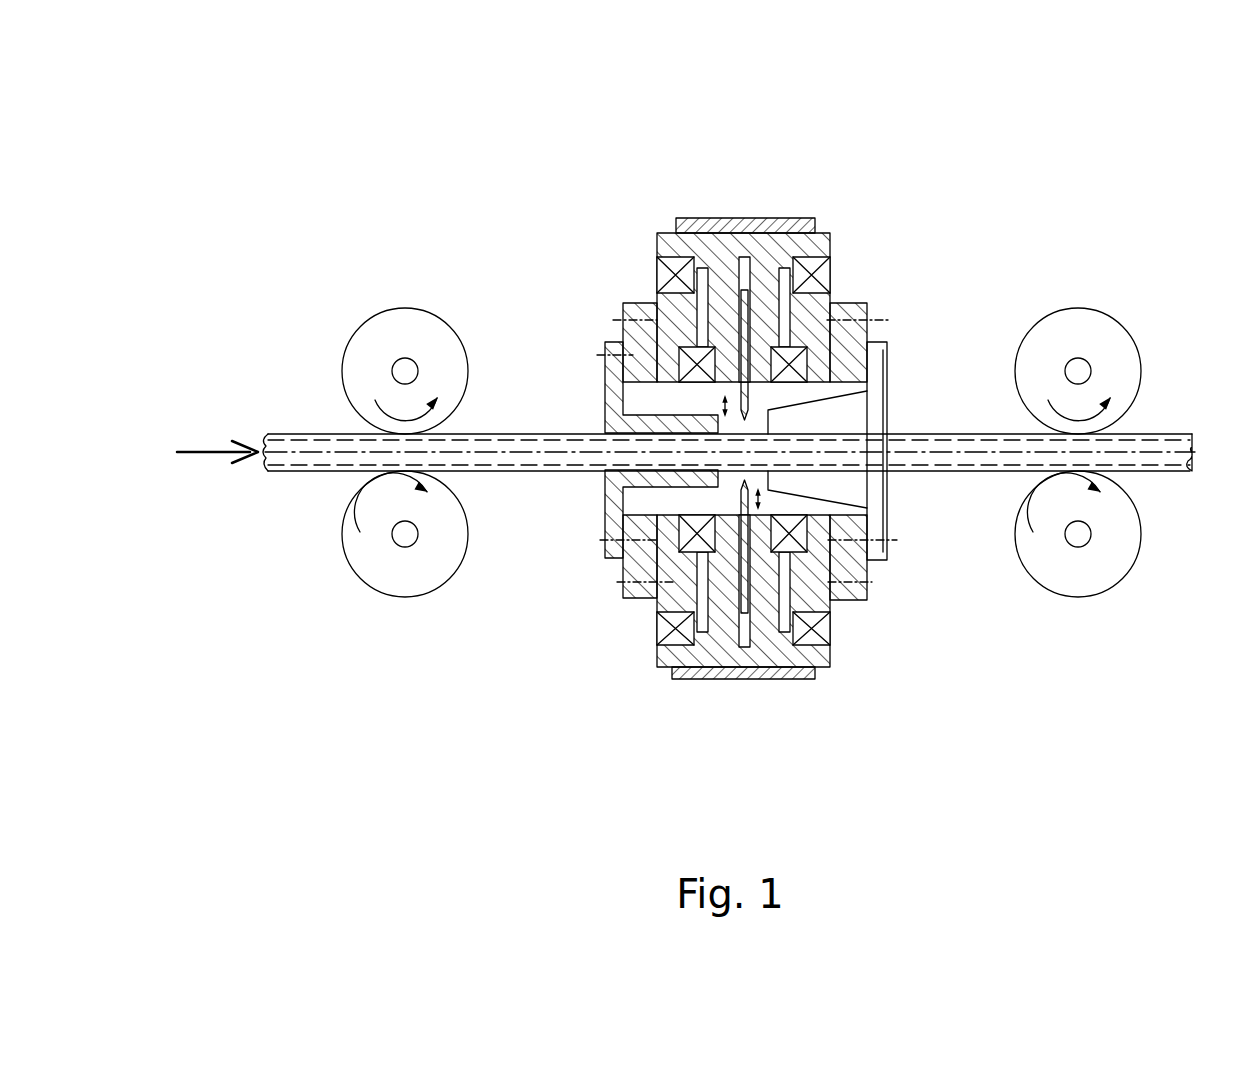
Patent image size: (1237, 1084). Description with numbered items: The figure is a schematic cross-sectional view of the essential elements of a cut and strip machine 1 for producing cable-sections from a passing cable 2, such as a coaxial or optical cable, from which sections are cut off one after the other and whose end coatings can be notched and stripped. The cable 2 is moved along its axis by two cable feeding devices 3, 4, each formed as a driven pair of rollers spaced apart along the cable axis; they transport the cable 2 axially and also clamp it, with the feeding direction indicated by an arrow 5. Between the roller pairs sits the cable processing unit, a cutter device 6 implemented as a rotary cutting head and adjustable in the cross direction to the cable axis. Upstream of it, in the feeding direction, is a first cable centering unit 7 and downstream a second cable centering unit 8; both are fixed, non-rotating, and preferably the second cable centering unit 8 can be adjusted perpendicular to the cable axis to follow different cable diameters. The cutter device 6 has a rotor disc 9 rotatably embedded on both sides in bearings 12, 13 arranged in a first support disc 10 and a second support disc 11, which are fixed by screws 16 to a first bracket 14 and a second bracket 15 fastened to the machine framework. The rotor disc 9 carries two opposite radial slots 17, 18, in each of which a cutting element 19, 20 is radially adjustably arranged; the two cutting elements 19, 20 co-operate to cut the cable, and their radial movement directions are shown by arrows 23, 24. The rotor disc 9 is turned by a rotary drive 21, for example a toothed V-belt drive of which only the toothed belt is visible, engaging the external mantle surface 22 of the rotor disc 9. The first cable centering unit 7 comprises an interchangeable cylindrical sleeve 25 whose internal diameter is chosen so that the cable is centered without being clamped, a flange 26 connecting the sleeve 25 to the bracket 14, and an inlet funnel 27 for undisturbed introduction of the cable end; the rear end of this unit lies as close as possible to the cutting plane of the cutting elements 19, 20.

The cut and strip machine 1 is at (1002, 215).
The cable 2 is at (340, 442).
The cable feeding device 3 is at (343, 327).
The cable feeding device 4 is at (1147, 340).
The arrow 5 is at (225, 447).
The cutter device 6 is at (818, 193).
The first cable centering unit 7 is at (590, 342).
The second cable centering unit 8 is at (920, 392).
The rotor disc 9 is at (700, 678).
The first support disc 10 is at (736, 594).
The second support disc 11 is at (830, 622).
The bearing 12 is at (823, 273).
The bearing 13 is at (832, 318).
The first bracket 14 is at (638, 572).
The second bracket 15 is at (862, 557).
The screws 16 is at (826, 321).
The radial slot 17 is at (743, 255).
The radial slot 18 is at (745, 648).
The cutting element 19 is at (733, 312).
The cutting element 20 is at (740, 592).
The rotary drive 21 is at (785, 684).
The external mantle surface 22 is at (667, 230).
The arrow 23 is at (722, 400).
The arrow 24 is at (847, 527).
The cylindrical sleeve 25 is at (657, 487).
The flange 26 is at (612, 395).
The inlet funnel 27 is at (602, 480).